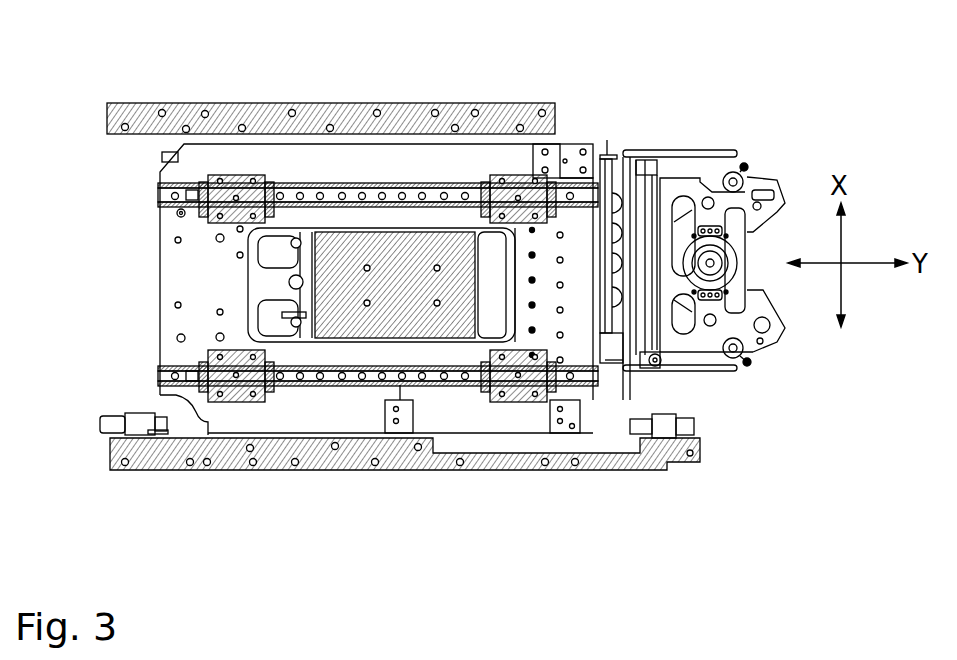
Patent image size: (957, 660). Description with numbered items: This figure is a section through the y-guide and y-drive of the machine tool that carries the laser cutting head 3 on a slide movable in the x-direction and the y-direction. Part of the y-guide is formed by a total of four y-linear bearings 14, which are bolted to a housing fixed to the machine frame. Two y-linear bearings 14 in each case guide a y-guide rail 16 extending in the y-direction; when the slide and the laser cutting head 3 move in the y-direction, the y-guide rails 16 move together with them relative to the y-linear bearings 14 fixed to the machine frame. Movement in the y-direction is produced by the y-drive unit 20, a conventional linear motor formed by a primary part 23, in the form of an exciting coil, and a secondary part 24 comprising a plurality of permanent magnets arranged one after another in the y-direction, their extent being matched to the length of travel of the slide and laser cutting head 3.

The y-linear bearing 14 is at (232, 178).
The y-guide rail 16 is at (375, 195).
The y-drive unit 20 is at (320, 278).
The primary part 23 is at (325, 258).
The secondary part 24 is at (335, 341).
The laser cutting head 3 is at (770, 362).